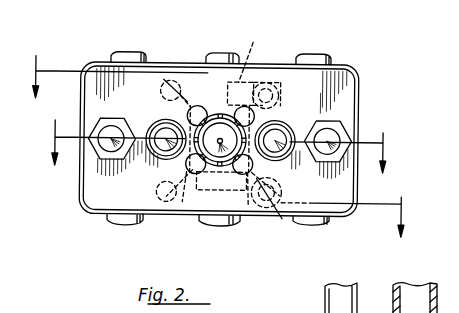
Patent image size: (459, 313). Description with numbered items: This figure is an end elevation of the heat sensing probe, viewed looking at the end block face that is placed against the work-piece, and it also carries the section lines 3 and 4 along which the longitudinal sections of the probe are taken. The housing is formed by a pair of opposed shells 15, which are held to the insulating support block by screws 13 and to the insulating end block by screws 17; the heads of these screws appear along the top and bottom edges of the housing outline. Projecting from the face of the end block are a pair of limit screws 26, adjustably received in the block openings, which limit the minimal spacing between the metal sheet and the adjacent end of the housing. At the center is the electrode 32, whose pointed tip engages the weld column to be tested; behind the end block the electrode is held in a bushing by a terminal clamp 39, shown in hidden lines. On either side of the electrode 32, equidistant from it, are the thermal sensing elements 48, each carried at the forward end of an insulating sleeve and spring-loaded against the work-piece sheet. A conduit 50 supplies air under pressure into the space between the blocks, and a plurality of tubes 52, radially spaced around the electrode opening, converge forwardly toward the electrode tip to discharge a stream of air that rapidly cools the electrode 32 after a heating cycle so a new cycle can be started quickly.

The section line 3— 3 is at (217, 136).
The section line 4— 4 is at (218, 136).
The screws 13 is at (125, 52).
The shells 15 is at (175, 63).
The screws 17 is at (223, 229).
The limit screws 26 is at (329, 140).
The electrode 32 is at (218, 123).
The terminal clamp 39 is at (250, 52).
The thermal sensing element 48 is at (161, 156).
The conduit 50 is at (283, 220).
The tubes 52 is at (188, 113).